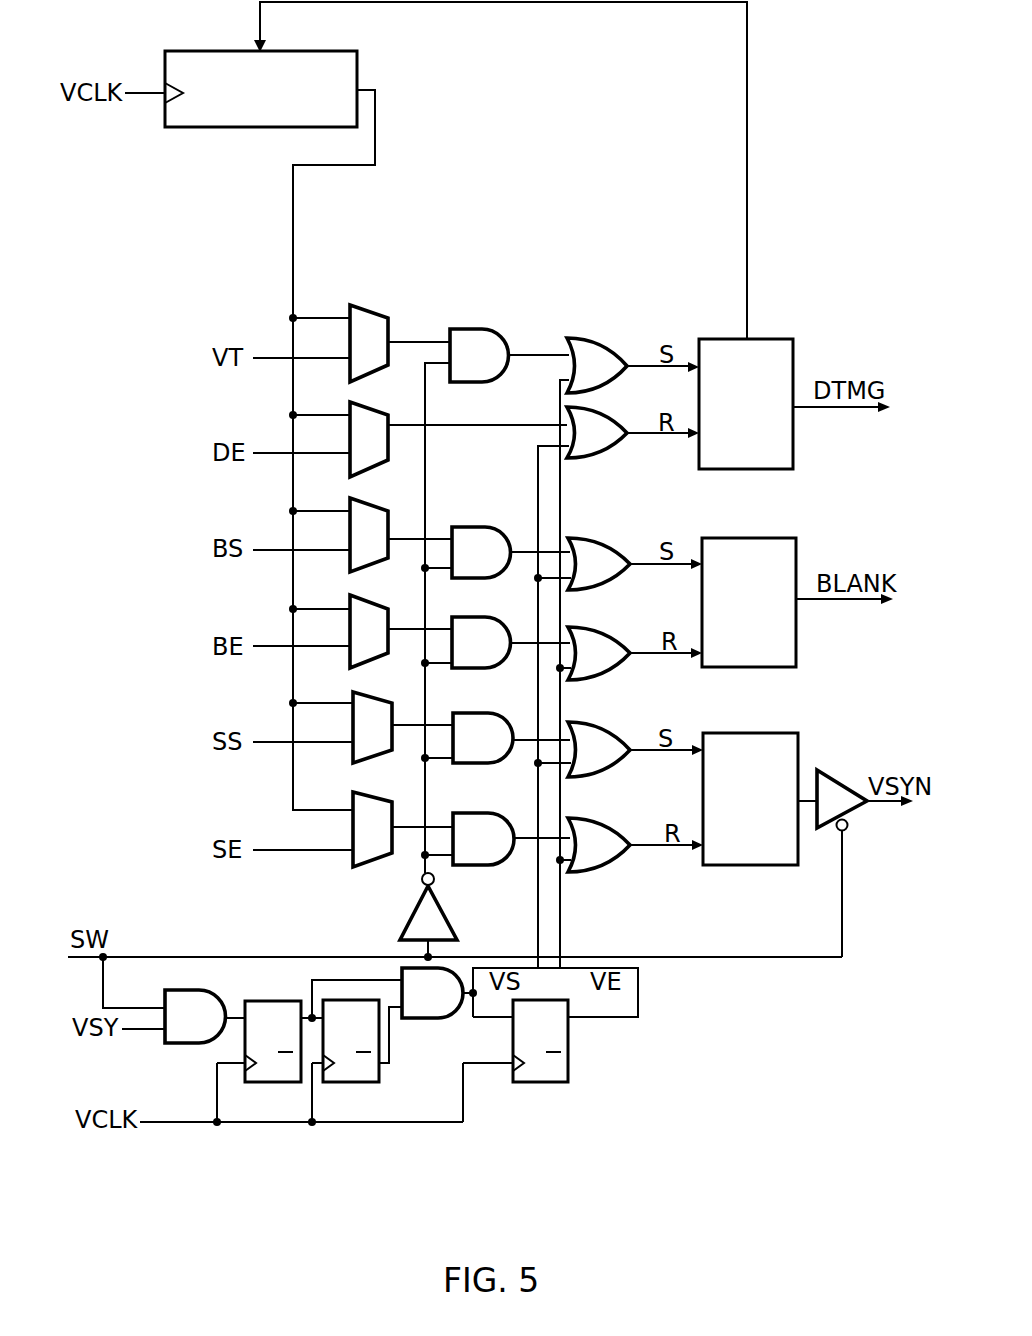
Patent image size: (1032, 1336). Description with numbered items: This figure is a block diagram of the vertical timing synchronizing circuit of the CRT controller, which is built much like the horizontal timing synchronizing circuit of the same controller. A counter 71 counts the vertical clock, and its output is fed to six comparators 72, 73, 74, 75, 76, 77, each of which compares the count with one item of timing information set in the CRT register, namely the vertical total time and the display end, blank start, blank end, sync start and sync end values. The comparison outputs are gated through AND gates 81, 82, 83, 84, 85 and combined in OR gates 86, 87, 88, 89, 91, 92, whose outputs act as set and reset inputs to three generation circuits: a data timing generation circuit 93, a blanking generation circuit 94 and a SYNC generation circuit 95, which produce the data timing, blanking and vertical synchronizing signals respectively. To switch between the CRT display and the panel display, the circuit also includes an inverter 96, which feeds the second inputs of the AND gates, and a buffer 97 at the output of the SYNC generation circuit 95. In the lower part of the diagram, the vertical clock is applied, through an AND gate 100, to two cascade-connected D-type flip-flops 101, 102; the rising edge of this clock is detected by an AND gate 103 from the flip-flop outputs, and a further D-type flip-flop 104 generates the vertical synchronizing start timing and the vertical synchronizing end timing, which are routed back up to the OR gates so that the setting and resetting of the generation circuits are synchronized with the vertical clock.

The counter 71 is at (176, 128).
The comparator 72 is at (366, 311).
The comparator 73 is at (366, 408).
The comparator 74 is at (368, 504).
The comparator 75 is at (368, 601).
The comparator 76 is at (370, 697).
The comparator 77 is at (362, 797).
The AND gate 81 is at (480, 329).
The AND gate 82 is at (474, 527).
The AND gate 83 is at (466, 617).
The AND gate 84 is at (468, 713).
The AND gate 85 is at (466, 813).
The OR gate 86 is at (588, 338).
The OR gate 87 is at (615, 457).
The OR gate 88 is at (577, 538).
The OR gate 89 is at (582, 628).
The OR gate 91 is at (580, 722).
The OR gate 92 is at (584, 818).
The DTMG generation circuit 93 is at (706, 339).
The BLANK generation circuit 94 is at (780, 538).
The SYNC generation circuit 95 is at (745, 866).
The inverter 96 is at (437, 882).
The buffer 97 is at (826, 775).
The AND gate 100 is at (196, 990).
The D-type flip-flop 101 is at (262, 1001).
The D-type flip-flop 102 is at (355, 1082).
The AND gate 103 is at (420, 1018).
The D-type flip-flop 104 is at (533, 1082).